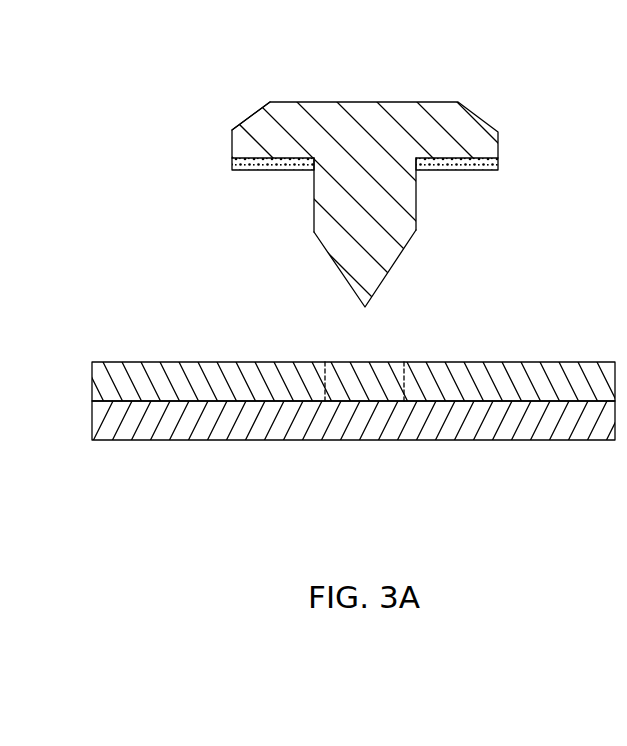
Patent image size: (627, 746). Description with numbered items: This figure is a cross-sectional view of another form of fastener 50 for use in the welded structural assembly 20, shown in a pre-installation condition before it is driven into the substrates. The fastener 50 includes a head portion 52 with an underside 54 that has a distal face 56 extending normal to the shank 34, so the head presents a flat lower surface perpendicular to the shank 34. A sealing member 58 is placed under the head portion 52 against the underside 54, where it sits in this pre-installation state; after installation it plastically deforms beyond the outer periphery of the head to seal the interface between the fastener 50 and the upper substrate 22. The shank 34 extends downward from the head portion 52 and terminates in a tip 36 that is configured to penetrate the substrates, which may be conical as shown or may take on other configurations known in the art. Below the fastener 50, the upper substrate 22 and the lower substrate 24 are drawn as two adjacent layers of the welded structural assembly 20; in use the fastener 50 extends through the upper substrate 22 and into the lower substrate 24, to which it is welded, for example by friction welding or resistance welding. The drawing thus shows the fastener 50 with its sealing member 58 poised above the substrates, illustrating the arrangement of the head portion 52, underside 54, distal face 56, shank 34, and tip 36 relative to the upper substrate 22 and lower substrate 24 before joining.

The welded structural assembly 20 is at (505, 59).
The upper substrate 22 is at (528, 370).
The lower substrate 24 is at (195, 420).
The shank 34 is at (372, 208).
The tip 36 is at (357, 263).
The fastener 50 is at (345, 130).
The head portion 52 is at (243, 102).
The underside 54 is at (267, 180).
The distal face 56 is at (453, 162).
The sealing member 58 is at (232, 162).